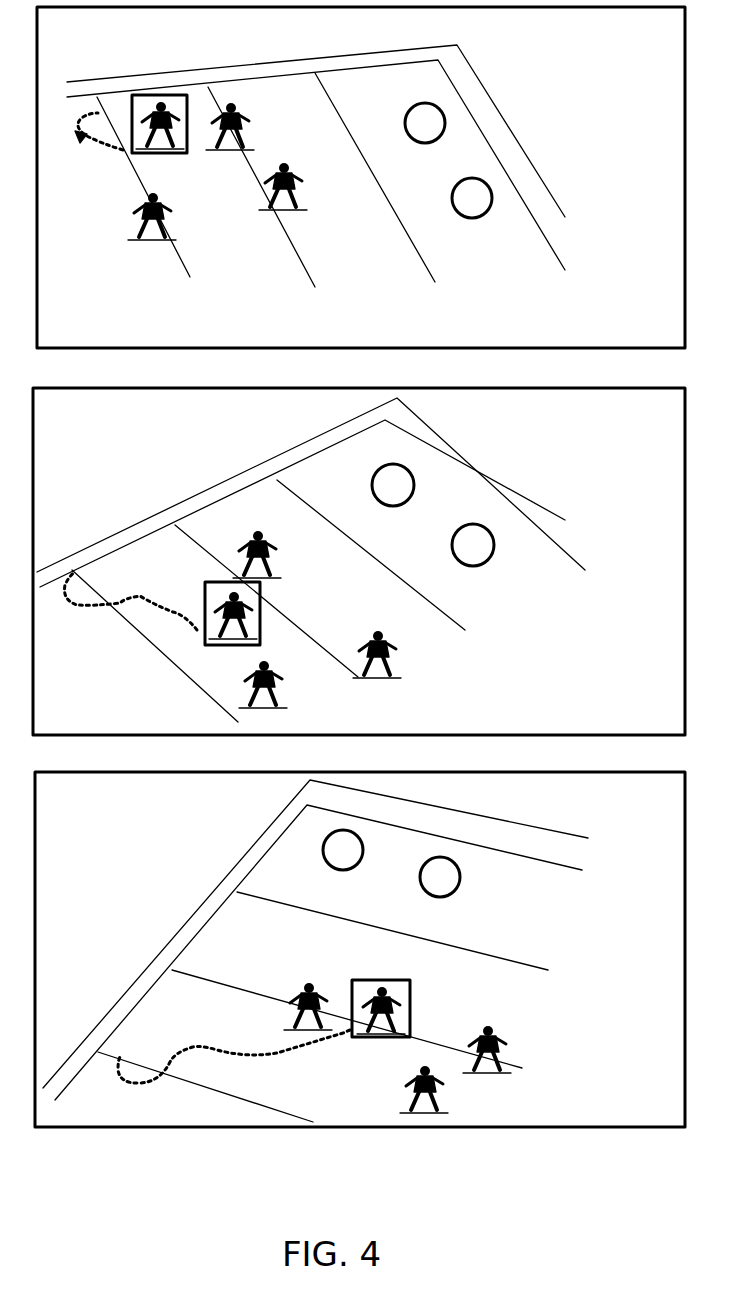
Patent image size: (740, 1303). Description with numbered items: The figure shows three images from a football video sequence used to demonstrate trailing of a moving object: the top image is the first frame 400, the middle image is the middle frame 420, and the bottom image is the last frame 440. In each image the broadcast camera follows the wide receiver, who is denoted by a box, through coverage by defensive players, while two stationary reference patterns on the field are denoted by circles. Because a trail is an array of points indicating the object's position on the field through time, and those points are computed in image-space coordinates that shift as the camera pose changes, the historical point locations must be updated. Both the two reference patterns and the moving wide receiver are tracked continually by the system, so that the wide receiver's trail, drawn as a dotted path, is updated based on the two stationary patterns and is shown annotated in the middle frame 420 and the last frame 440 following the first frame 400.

The first frame 400 is at (97, 38).
The middle frame 420 is at (97, 421).
The last frame 440 is at (95, 807).